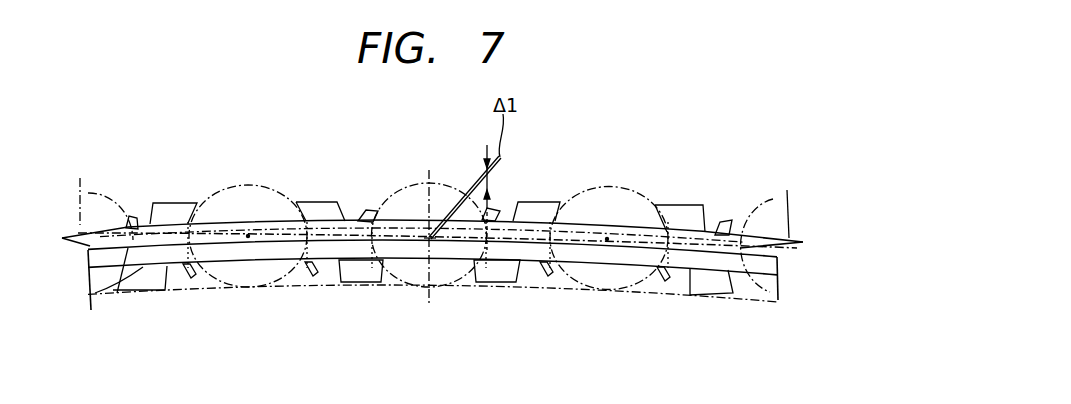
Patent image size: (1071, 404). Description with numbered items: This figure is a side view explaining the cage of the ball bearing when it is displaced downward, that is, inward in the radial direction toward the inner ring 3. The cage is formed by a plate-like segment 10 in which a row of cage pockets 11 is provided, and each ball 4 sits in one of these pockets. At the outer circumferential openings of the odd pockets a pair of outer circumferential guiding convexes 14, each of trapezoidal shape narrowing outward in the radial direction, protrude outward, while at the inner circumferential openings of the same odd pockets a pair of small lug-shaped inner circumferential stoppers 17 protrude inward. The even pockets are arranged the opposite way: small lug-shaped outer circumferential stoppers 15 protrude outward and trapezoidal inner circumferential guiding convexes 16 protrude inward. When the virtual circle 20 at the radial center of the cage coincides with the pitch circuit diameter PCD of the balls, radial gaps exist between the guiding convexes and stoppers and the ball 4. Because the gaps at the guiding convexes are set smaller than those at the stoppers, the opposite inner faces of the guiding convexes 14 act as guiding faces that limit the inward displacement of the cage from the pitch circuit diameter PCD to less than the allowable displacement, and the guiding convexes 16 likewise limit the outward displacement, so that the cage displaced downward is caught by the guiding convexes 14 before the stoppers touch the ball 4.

The inner ring 3 is at (163, 296).
The ball 4 is at (418, 187).
The plate-like segment 10 is at (782, 269).
The cage pocket 11 is at (640, 255).
The outer circumferential guiding convex 14 is at (172, 208).
The outer circumferential stopper 15 is at (363, 207).
The inner circumferential guiding convex 16 is at (360, 283).
The inner circumferential stopper 17 is at (196, 280).
The virtual circle 20 is at (703, 285).
The pitch circuit diameter PCD is at (769, 200).